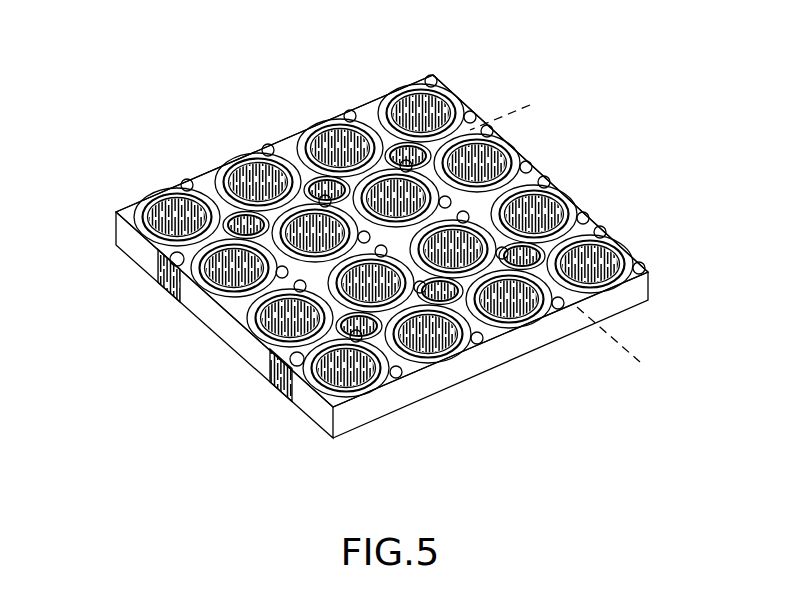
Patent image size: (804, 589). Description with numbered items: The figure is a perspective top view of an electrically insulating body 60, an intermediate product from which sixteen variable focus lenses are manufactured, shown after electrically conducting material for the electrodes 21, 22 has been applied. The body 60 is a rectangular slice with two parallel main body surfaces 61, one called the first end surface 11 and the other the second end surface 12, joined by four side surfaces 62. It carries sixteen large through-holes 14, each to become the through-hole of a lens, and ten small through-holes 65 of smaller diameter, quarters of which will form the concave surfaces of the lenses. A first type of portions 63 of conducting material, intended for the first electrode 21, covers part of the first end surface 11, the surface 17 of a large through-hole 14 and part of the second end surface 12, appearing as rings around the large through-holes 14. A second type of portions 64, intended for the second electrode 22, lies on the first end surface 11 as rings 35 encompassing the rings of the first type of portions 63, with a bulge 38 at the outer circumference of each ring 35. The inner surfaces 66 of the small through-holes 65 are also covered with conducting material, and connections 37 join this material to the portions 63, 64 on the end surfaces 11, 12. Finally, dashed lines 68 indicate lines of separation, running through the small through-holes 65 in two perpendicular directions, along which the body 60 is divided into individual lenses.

The first end surface 11 is at (382, 232).
The second end surface 12 is at (380, 318).
The large through-hole 14 is at (607, 262).
The surface of a large through-hole 17 is at (514, 310).
The first electrode 21 is at (420, 77).
The second electrode 22 is at (448, 92).
The ring 35 is at (153, 173).
The connection 37 is at (320, 178).
The bulge 38 is at (188, 187).
The electrically insulating body 60 is at (387, 248).
The main body surface 61 is at (520, 177).
The side surface 62 is at (157, 263).
The first type of portions of electrically conducting material 63 is at (303, 392).
The second type of portions of electrically conducting material 64 is at (371, 390).
The small through-hole 65 is at (308, 143).
The inner surface of small through-hole 66 is at (441, 303).
The line of separation 68 is at (530, 105).